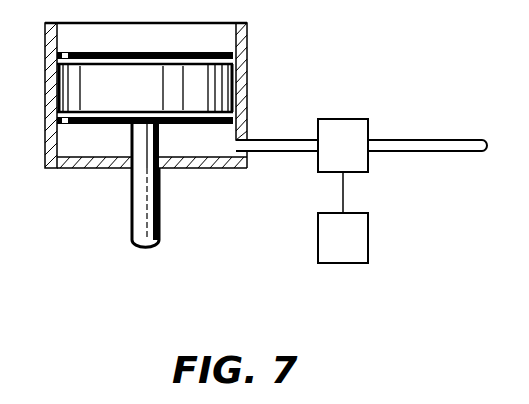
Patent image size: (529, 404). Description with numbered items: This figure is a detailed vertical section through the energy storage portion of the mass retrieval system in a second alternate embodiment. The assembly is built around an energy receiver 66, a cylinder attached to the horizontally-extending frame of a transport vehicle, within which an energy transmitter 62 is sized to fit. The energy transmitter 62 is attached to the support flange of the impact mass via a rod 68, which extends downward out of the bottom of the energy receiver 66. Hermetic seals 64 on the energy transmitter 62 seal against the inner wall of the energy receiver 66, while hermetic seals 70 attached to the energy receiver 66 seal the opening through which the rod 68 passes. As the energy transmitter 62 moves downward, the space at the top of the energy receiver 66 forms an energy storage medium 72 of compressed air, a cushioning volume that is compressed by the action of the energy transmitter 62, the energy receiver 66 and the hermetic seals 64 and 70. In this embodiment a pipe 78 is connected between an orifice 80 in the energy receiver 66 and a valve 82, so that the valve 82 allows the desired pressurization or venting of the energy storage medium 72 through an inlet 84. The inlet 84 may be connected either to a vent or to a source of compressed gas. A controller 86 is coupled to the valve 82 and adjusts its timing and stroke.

The energy transmitter 62 is at (118, 82).
The hermetic seals 64 is at (152, 112).
The energy receiver 66 is at (247, 93).
The rod 68 is at (131, 230).
The hermetic seals 70 is at (165, 168).
The energy storage medium 72 is at (83, 143).
The pipe 78 is at (272, 150).
The orifice 80 is at (240, 137).
The valve 82 is at (357, 157).
The inlet 84 is at (427, 152).
The controller 86 is at (357, 250).